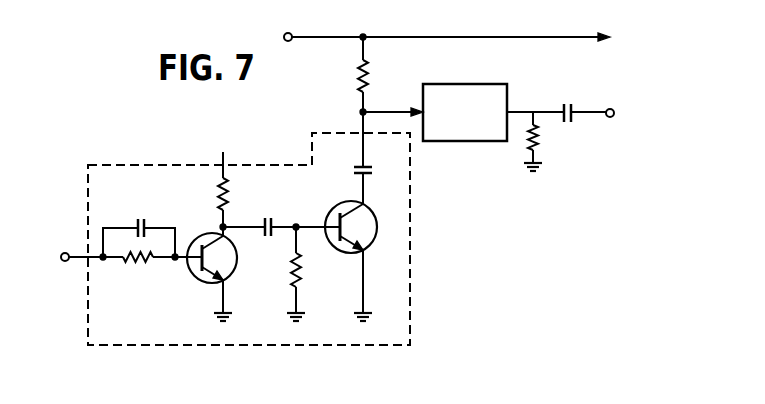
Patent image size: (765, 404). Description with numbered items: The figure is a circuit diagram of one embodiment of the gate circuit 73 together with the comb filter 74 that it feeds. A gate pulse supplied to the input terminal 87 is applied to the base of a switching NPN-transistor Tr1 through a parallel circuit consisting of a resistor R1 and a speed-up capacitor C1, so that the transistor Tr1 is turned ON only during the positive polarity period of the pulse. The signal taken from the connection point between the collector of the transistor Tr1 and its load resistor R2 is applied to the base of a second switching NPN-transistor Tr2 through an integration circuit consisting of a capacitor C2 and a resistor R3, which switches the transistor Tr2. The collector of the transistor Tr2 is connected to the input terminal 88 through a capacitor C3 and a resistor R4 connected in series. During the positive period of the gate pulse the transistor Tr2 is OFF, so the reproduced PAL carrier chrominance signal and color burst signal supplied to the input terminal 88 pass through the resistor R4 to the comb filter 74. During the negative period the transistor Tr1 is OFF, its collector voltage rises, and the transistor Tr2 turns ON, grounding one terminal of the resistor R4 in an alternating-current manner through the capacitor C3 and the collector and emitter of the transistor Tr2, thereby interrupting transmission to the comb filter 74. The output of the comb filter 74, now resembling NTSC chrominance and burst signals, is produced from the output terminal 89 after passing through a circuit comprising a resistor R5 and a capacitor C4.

The gate circuit 73 is at (410, 255).
The comb filter 74 is at (458, 84).
The input terminal 87 is at (65, 253).
The input terminal 88 is at (288, 41).
The output terminal 89 is at (610, 109).
The resistor R1 is at (151, 272).
The load resistor R2 is at (220, 180).
The resistor R3 is at (308, 274).
The resistor R4 is at (378, 76).
The resistor R5 is at (538, 141).
The speed-up capacitor C1 is at (139, 225).
The capacitor C2 is at (281, 217).
The capacitor C3 is at (378, 147).
The capacitor C4 is at (581, 101).
The switching NPN-transistor Tr1 is at (236, 272).
The switching NPN-transistor Tr2 is at (335, 206).